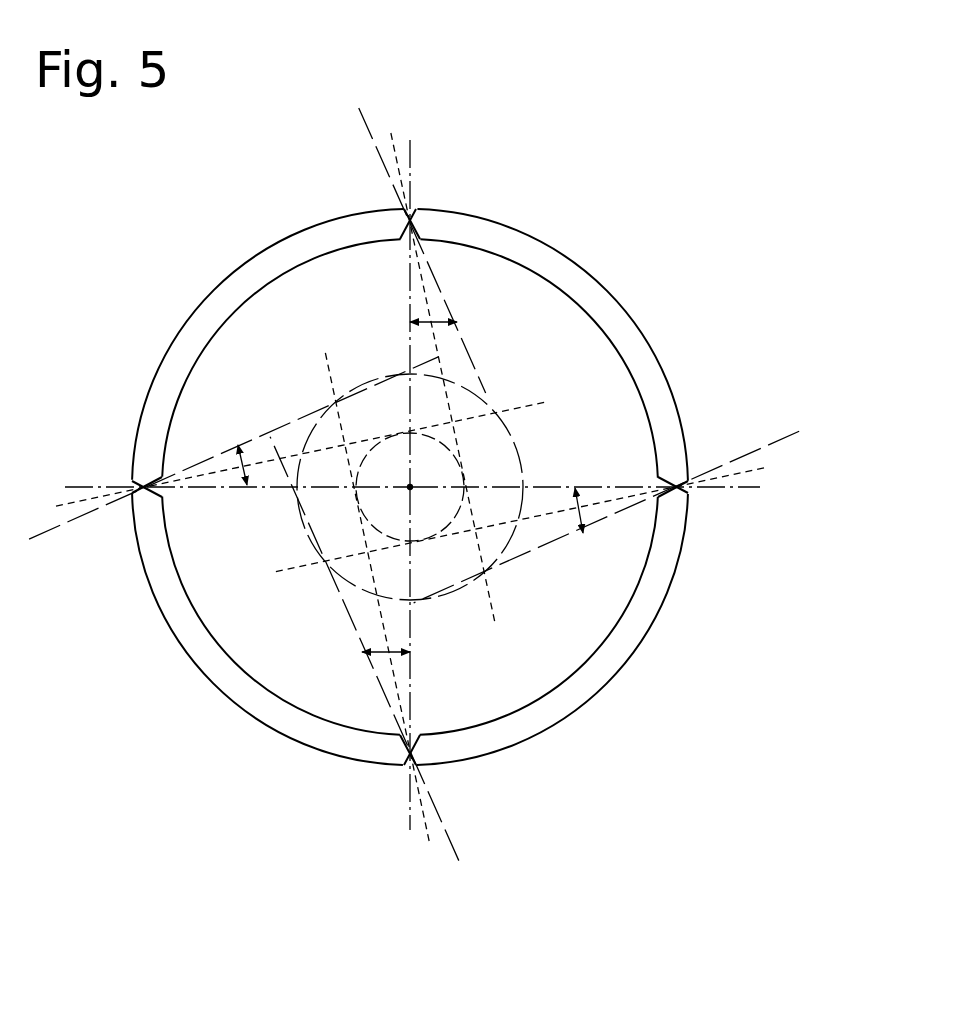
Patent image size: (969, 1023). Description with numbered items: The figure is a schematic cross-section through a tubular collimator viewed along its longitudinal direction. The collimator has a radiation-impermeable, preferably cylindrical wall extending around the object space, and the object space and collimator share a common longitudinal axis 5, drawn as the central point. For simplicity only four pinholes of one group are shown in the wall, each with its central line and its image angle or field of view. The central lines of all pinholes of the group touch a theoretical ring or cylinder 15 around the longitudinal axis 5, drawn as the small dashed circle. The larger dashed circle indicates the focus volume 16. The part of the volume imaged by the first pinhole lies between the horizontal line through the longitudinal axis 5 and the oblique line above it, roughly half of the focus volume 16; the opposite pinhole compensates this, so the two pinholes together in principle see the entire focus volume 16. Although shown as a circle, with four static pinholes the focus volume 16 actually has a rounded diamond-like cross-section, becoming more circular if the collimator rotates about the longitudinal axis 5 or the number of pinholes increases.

The theoretical ring or cylinder 15 is at (463, 470).
The focus volume 16 is at (516, 438).
The longitudinal axis 5 is at (411, 487).